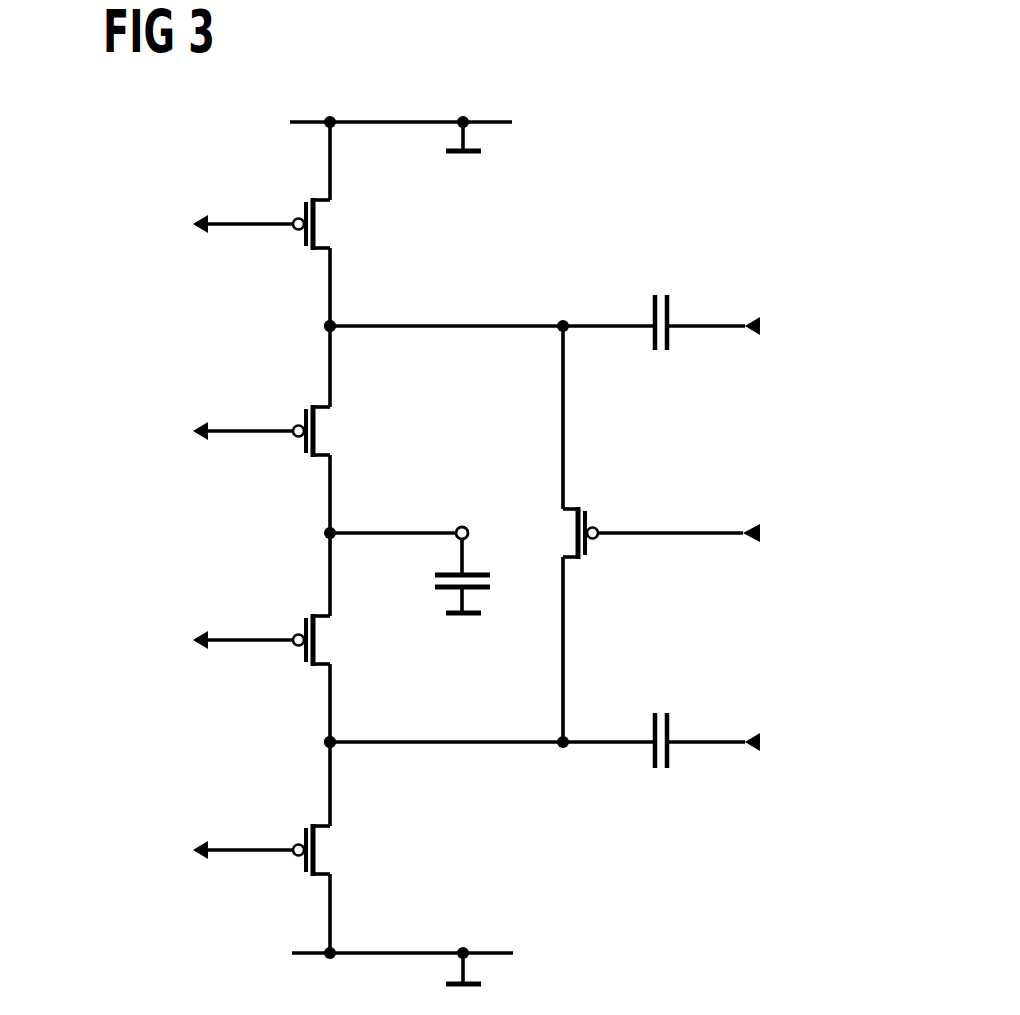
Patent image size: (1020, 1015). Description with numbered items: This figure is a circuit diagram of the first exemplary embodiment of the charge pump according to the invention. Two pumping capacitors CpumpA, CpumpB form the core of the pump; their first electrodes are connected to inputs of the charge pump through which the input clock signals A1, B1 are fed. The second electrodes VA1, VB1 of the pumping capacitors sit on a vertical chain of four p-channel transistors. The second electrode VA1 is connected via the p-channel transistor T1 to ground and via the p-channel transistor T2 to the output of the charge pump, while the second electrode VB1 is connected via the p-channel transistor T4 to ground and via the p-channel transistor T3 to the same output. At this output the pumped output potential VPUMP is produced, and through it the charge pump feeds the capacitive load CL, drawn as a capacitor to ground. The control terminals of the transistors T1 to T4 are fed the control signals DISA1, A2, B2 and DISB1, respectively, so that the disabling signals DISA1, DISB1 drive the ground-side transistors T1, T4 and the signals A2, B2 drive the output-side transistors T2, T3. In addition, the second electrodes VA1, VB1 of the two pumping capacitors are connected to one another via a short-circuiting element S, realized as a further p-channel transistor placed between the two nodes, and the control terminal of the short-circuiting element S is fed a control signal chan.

The p-channel transistor T1 is at (308, 207).
The p-channel transistor T2 is at (308, 415).
The p-channel transistor T3 is at (308, 623).
The p-channel transistor T4 is at (308, 833).
The short-circuiting element S is at (587, 516).
The capacitive load CL is at (477, 573).
The pumping capacitor CpumpA is at (669, 306).
The pumping capacitor CpumpB is at (669, 724).
The second electrode of pumping capacitor CpumpA VA1 is at (332, 324).
The second electrode of pumping capacitor CpumpB VB1 is at (332, 740).
The pumped output potential VPUMP is at (492, 505).
The control signal DISA1 is at (187, 228).
The control signal A2 is at (215, 438).
The control signal B2 is at (217, 643).
The control signal DISB1 is at (190, 853).
The input clock signal A1 is at (778, 325).
The input clock signal B1 is at (778, 740).
The control signal chan is at (717, 528).